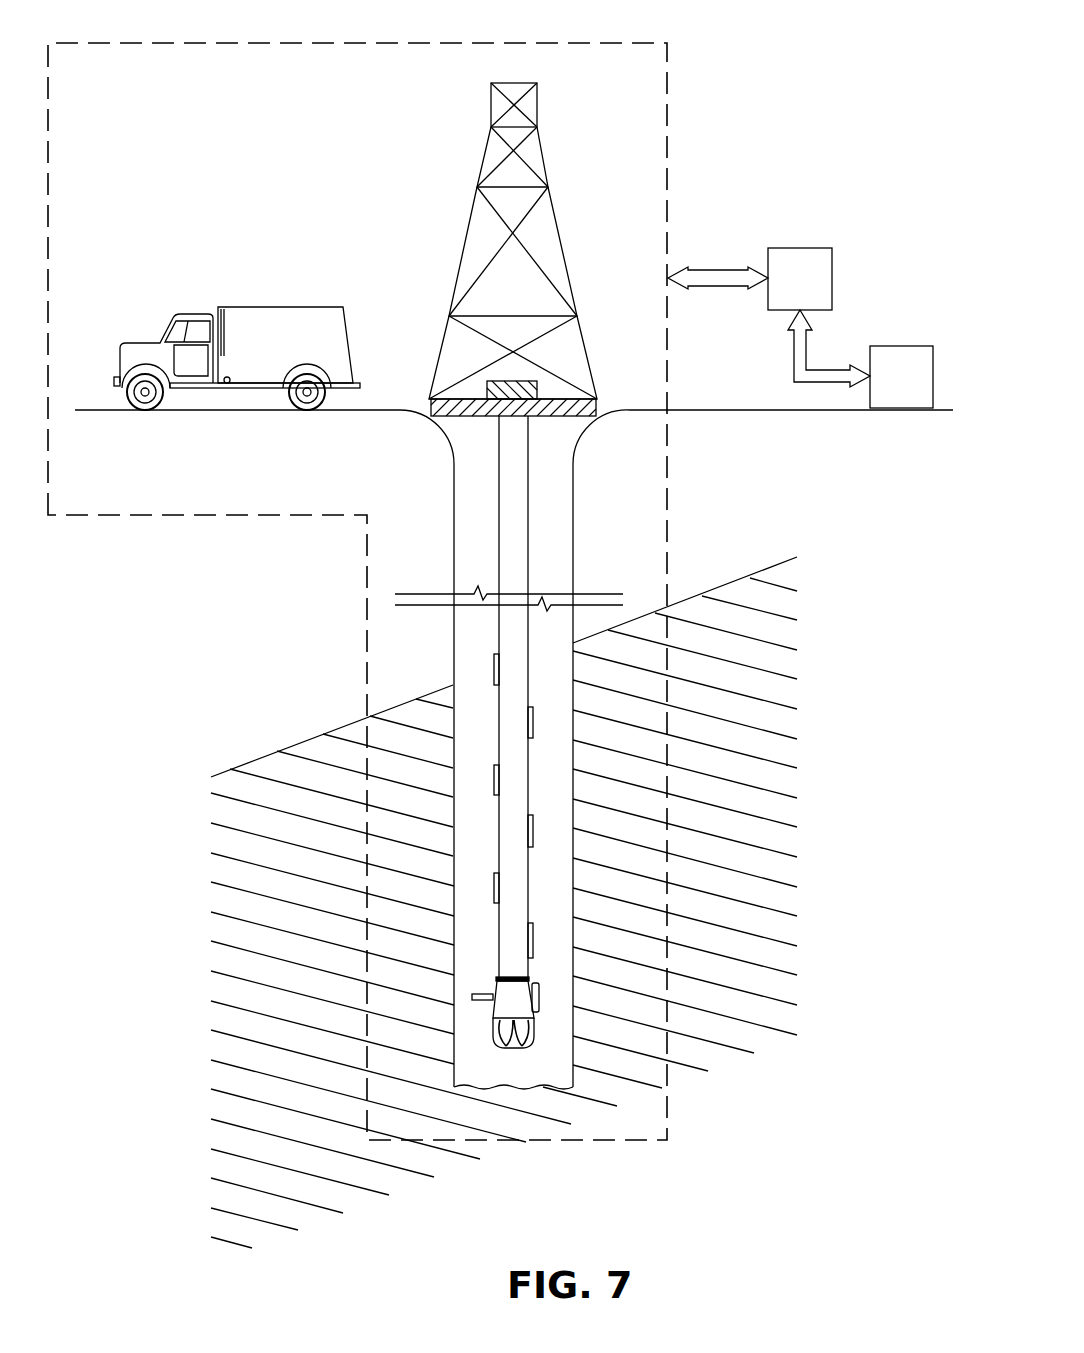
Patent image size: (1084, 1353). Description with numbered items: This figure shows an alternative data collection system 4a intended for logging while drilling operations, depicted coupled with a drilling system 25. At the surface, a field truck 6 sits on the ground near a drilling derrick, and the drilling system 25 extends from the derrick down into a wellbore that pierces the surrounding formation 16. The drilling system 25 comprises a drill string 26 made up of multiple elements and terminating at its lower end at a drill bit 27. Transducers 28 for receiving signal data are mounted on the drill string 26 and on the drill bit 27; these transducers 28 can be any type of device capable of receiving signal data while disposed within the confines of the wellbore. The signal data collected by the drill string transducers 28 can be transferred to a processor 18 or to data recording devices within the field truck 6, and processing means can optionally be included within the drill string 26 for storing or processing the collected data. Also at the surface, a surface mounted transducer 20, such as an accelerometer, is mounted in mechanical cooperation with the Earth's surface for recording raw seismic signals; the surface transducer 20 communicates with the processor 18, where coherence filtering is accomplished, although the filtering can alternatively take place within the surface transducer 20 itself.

The data collection system 4a is at (345, 32).
The field truck 6 is at (285, 306).
The formation 16 is at (737, 813).
The processor 18 is at (805, 248).
The surface mounted transducer 20 is at (912, 346).
The drilling system 25 is at (473, 693).
The drill string 26 is at (528, 528).
The drill bit 27 is at (472, 997).
The transducers 28 is at (493, 880).